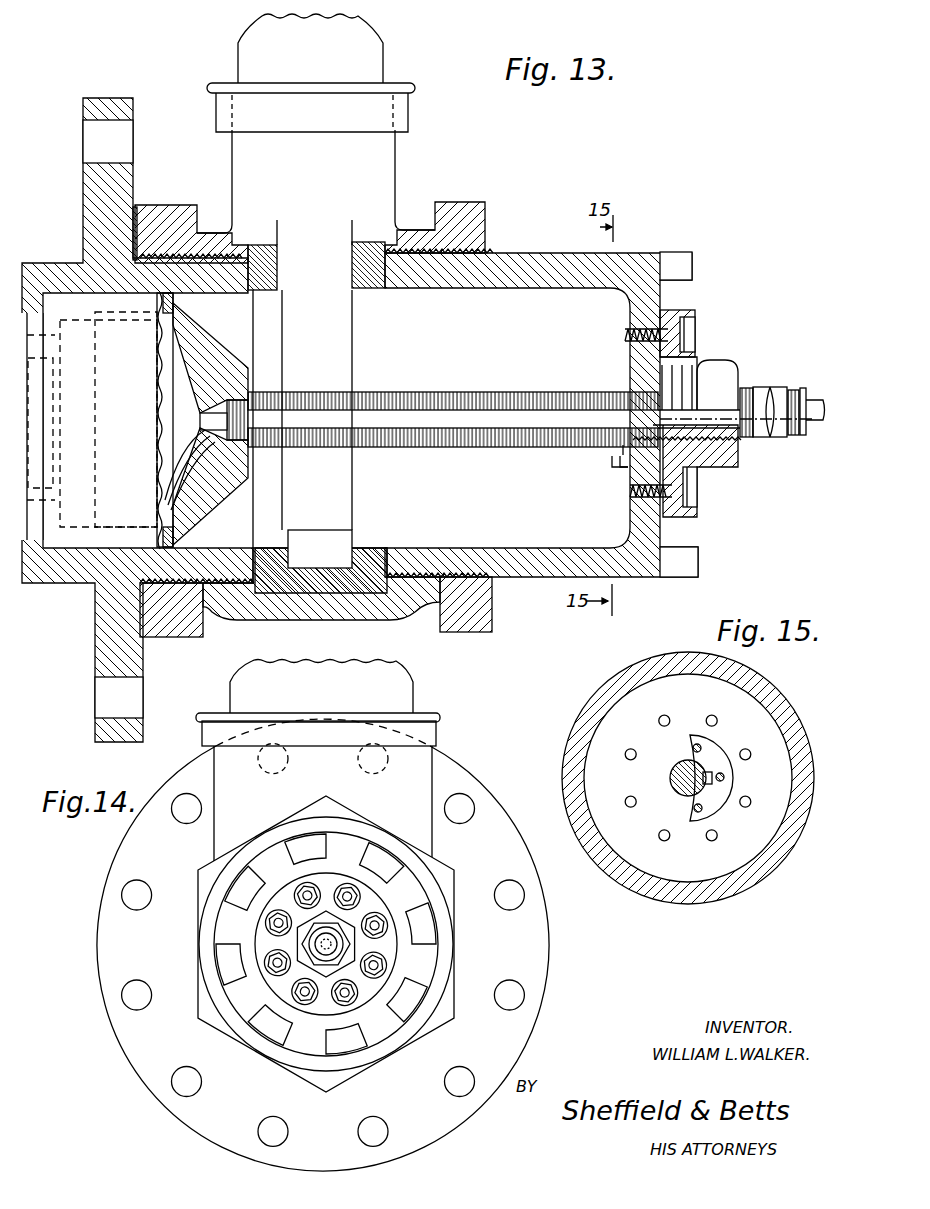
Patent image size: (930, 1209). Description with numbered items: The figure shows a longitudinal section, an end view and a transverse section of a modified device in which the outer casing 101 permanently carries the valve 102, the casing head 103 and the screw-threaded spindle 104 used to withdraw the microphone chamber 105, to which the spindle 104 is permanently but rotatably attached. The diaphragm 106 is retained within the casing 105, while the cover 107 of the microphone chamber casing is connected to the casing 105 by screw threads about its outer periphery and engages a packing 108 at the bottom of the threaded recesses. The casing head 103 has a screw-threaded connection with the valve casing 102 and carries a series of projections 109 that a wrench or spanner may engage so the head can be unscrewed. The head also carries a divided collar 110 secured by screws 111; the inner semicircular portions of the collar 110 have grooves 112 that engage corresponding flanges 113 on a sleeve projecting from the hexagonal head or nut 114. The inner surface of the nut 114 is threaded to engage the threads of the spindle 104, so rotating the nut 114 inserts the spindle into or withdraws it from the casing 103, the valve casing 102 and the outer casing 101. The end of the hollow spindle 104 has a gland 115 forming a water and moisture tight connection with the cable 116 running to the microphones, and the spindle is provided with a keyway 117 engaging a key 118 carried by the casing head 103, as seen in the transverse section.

In FIG. 13, the outer casing 101 is at (140, 205).
In FIG. 13, the valve 102 is at (400, 193).
In FIG. 13, the casing head 103 is at (519, 253).
In FIG. 15, the casing head 103 is at (666, 893).
In FIG. 13, the screw-threaded spindle 104 is at (528, 392).
In FIG. 15, the screw-threaded spindle 104 is at (682, 787).
In FIG. 13, the microphone chamber 105 is at (83, 262).
In FIG. 13, the diaphragm 106 is at (30, 397).
In FIG. 13, the cover 107 is at (228, 362).
In FIG. 13, the packing 108 is at (193, 538).
In FIG. 13, the projections 109 is at (699, 562).
In FIG. 14, the projections 109 is at (234, 892).
In FIG. 13, the divided collar 110 is at (696, 322).
In FIG. 14, the divided collar 110 is at (367, 997).
In FIG. 13, the screws 111 is at (697, 344).
In FIG. 14, the screws 111 is at (382, 957).
In FIG. 13, the grooves 112 is at (698, 483).
In FIG. 13, the flanges 113 is at (683, 380).
In FIG. 13, the hexagonal head or nut 114 is at (738, 457).
In FIG. 14, the hexagonal head or nut 114 is at (330, 968).
In FIG. 13, the gland 115 is at (803, 440).
In FIG. 14, the gland 115 is at (340, 927).
In FIG. 13, the cable 116 is at (803, 420).
In FIG. 14, the cable 116 is at (338, 943).
In FIG. 13, the keyway 117 is at (547, 413).
In FIG. 15, the keyway 117 is at (727, 785).
In FIG. 13, the key 118 is at (620, 468).
In FIG. 15, the key 118 is at (715, 750).